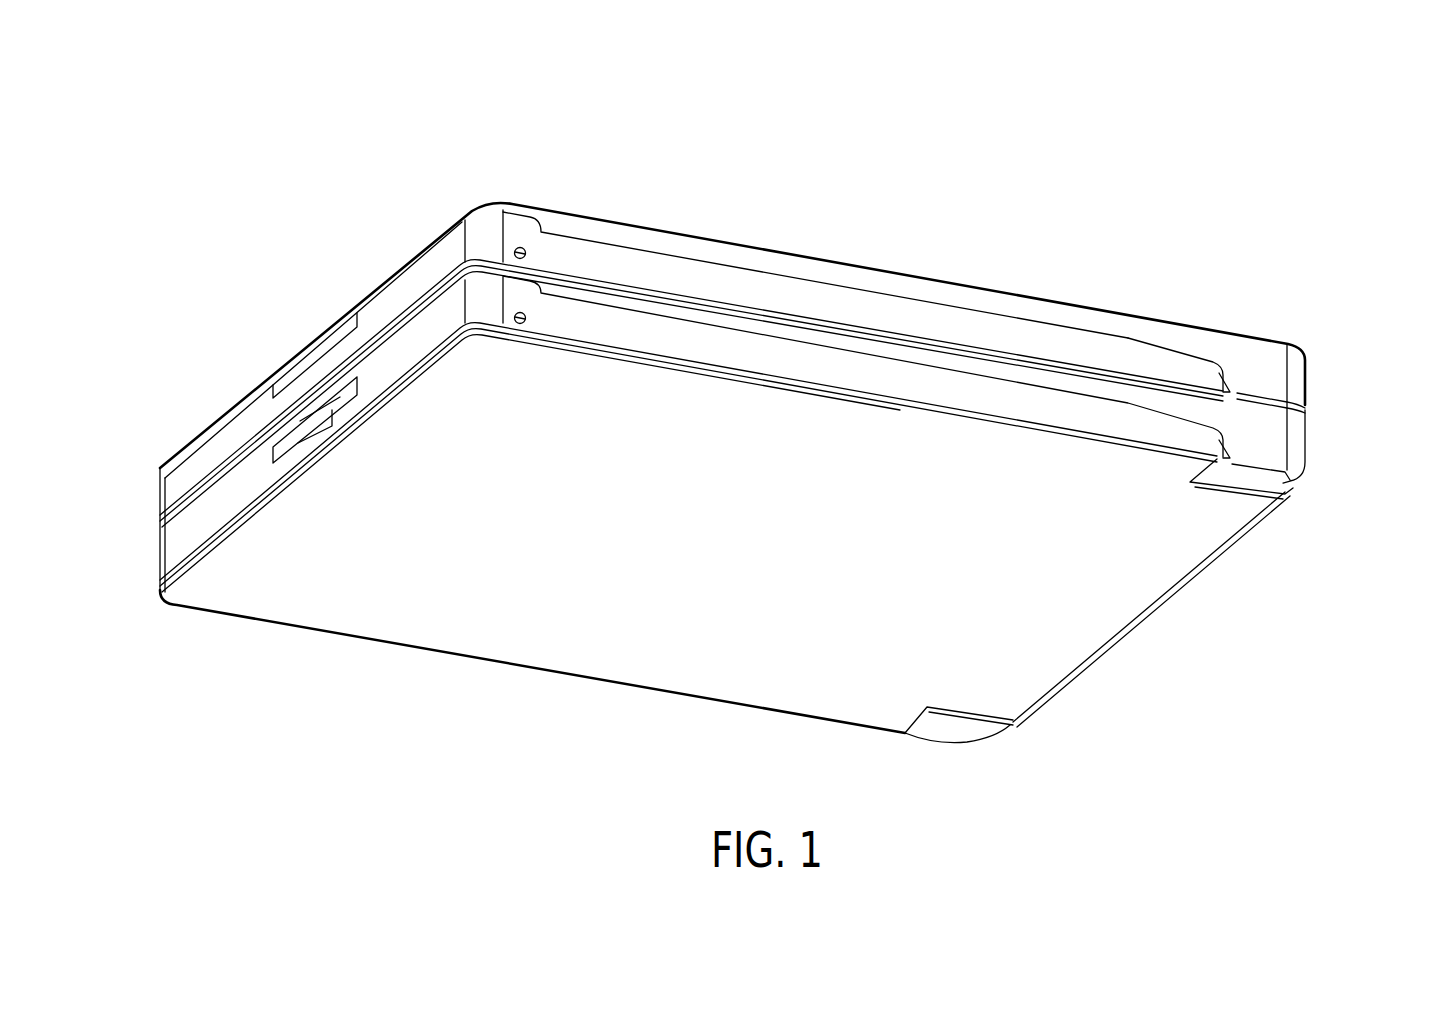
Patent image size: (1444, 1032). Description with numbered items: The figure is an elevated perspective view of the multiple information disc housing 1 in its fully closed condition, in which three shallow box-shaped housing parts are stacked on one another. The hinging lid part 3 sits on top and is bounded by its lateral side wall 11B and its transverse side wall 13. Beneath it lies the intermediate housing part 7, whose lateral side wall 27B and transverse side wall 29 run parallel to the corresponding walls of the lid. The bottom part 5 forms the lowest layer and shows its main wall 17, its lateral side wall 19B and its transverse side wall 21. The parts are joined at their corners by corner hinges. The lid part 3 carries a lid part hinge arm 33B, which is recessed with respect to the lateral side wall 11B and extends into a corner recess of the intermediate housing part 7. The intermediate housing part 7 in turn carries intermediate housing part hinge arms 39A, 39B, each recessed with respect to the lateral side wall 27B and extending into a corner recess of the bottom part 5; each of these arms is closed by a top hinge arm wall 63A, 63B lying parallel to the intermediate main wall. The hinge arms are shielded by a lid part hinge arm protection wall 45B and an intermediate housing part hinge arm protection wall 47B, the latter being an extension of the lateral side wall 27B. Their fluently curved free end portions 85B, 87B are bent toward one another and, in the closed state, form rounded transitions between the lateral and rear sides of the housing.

The housing 1 is at (1366, 152).
The lid part 3 is at (1290, 324).
The bottom part 5 is at (153, 553).
The intermediate housing part 7 is at (1320, 420).
The first housing part lateral side wall 11B is at (711, 250).
The first housing part transverse side wall 13 is at (313, 337).
The second housing part main wall 17 is at (598, 662).
The second housing part lateral side wall 19B is at (882, 378).
The second housing part transverse side wall 21 is at (198, 533).
The intermediate housing part lateral side wall 27B is at (878, 300).
The intermediate housing part transverse side wall 29 is at (418, 292).
The lid part hinge arm 33B is at (1310, 357).
The intermediate housing part hinge arm 39A is at (970, 745).
The intermediate housing part hinge arm 39B is at (1305, 480).
The lid part hinge arm protection wall 45B is at (1252, 356).
The intermediate housing part hinge arm protection wall 47B is at (1280, 435).
The top intermediate housing part hinge arm wall 63A is at (935, 722).
The top intermediate housing part hinge arm wall 63B is at (1276, 484).
The lid part hinge arm free end portion 85B is at (1300, 382).
The intermediate housing part hinge arm free end portion 87B is at (1298, 450).